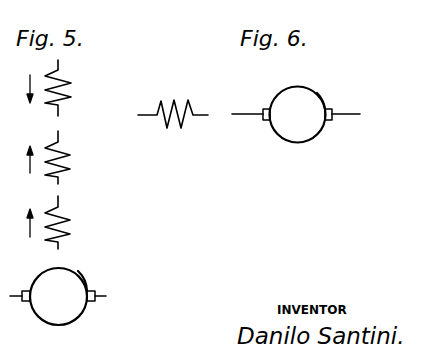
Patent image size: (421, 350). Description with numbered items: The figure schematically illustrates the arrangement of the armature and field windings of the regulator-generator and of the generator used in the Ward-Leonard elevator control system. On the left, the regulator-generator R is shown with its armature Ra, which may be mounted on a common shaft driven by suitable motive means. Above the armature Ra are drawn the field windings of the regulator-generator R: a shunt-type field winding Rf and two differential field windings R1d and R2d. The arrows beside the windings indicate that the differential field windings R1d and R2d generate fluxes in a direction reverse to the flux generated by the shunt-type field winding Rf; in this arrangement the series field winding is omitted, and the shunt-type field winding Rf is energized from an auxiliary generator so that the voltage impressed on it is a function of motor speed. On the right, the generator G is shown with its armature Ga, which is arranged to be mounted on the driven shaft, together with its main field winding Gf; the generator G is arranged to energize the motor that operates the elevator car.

In FIG. 5, the shunt-type field winding Rf is at (73, 93).
In FIG. 5, the differential field winding R1d is at (71, 163).
In FIG. 5, the differential field winding R2d is at (71, 228).
In FIG. 5, the regulator-generator R is at (32, 280).
In FIG. 5, the armature Ra is at (81, 284).
In FIG. 6, the main field winding Gf is at (189, 100).
In FIG. 6, the generator G is at (259, 98).
In FIG. 6, the armature Ga is at (320, 106).